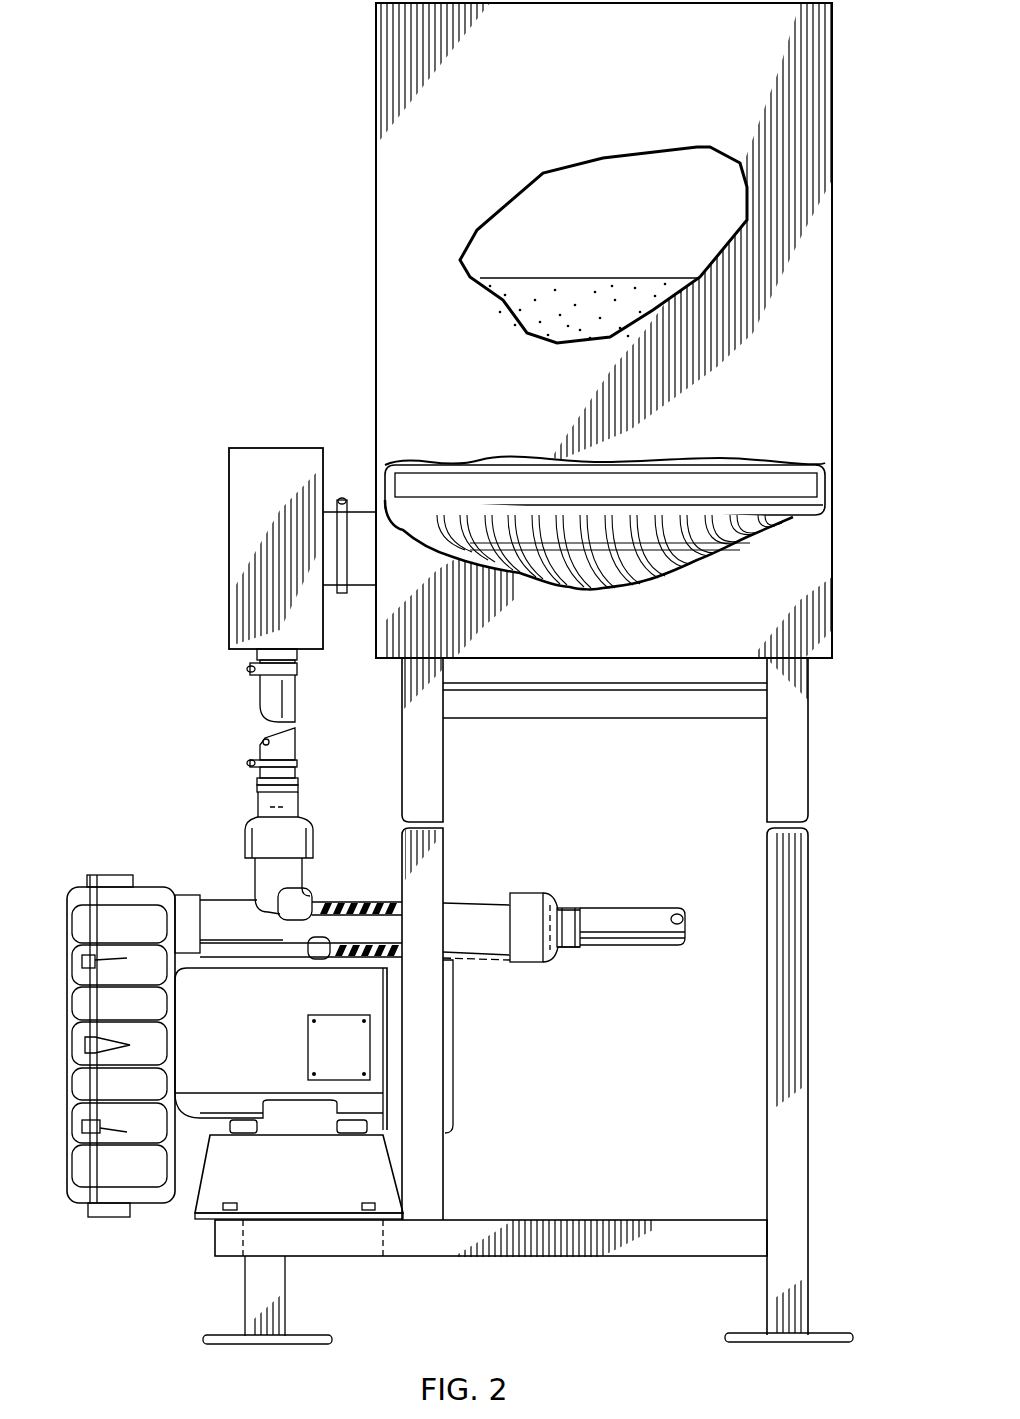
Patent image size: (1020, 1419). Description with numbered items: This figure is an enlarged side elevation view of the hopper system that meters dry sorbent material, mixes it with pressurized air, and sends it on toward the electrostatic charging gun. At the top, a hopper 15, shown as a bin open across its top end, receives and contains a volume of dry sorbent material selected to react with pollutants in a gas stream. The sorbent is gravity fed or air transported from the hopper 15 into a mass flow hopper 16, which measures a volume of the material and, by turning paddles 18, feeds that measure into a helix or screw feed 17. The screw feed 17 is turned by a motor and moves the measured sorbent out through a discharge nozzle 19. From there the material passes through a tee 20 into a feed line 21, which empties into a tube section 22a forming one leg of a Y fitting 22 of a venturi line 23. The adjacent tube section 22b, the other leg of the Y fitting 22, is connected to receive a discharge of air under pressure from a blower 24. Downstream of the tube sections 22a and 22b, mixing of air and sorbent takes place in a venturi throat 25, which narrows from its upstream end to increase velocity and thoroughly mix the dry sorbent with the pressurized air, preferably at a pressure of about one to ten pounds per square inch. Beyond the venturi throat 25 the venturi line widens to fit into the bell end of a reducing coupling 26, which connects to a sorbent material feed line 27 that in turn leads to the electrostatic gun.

The hopper 15 is at (693, 193).
The mass flow hopper 16 is at (623, 315).
The helix or screw feed 17 is at (693, 535).
The paddles 18 is at (750, 482).
The discharge nozzle 19 is at (360, 567).
The tee 20 is at (240, 498).
The feed line 21 is at (263, 703).
The Y fitting 22 is at (297, 897).
The tube section 22a is at (263, 873).
The tube section 22b is at (225, 938).
The venturi line 23 is at (465, 960).
The blower 24 is at (118, 1175).
The venturi throat 25 is at (322, 950).
The reducing coupling 26 is at (528, 908).
The sorbent material feed line 27 is at (617, 940).